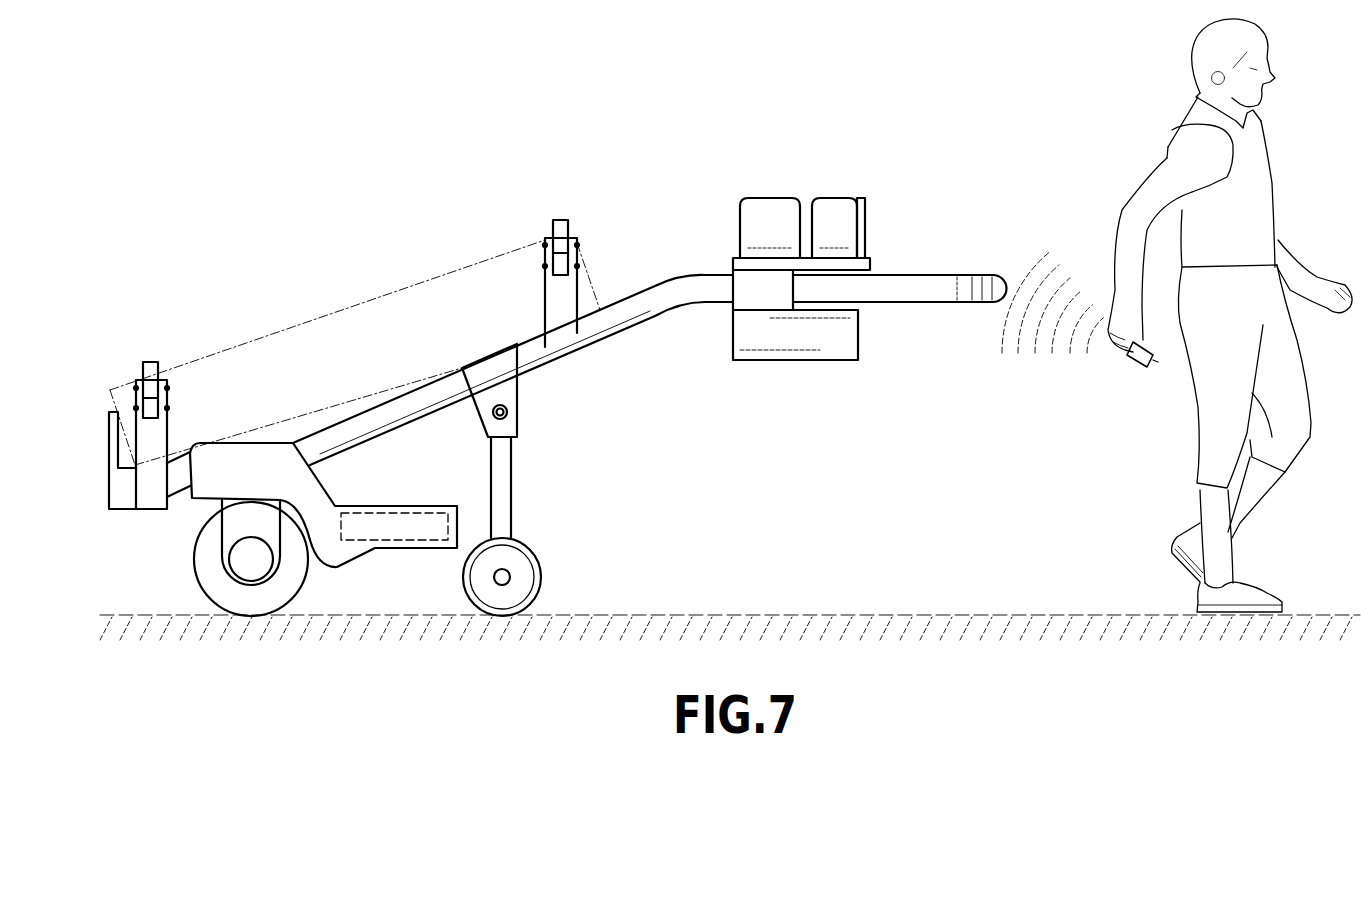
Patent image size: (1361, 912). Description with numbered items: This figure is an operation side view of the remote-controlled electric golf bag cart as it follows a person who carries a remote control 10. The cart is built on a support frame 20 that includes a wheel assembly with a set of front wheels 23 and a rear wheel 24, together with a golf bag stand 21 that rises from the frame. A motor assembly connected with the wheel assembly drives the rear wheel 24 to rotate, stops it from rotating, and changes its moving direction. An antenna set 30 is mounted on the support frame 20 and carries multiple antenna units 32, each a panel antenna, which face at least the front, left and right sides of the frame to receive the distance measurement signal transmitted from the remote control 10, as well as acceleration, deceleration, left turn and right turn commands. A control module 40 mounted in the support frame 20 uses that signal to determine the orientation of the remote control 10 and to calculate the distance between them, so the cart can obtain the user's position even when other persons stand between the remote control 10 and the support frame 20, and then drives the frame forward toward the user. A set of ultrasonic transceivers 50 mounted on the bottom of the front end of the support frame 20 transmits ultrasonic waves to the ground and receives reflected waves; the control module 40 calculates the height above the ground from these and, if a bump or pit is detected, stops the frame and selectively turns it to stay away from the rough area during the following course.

The remote control 10 is at (1137, 362).
The support frame 20 is at (668, 270).
The golf bag stand 21 is at (136, 371).
The front wheels 23 is at (527, 575).
The rear wheel 24 is at (293, 575).
The antenna set 30 is at (822, 210).
The antenna units 32 is at (767, 212).
The control module 40 is at (397, 527).
The ultrasonic transceivers 50 is at (750, 332).